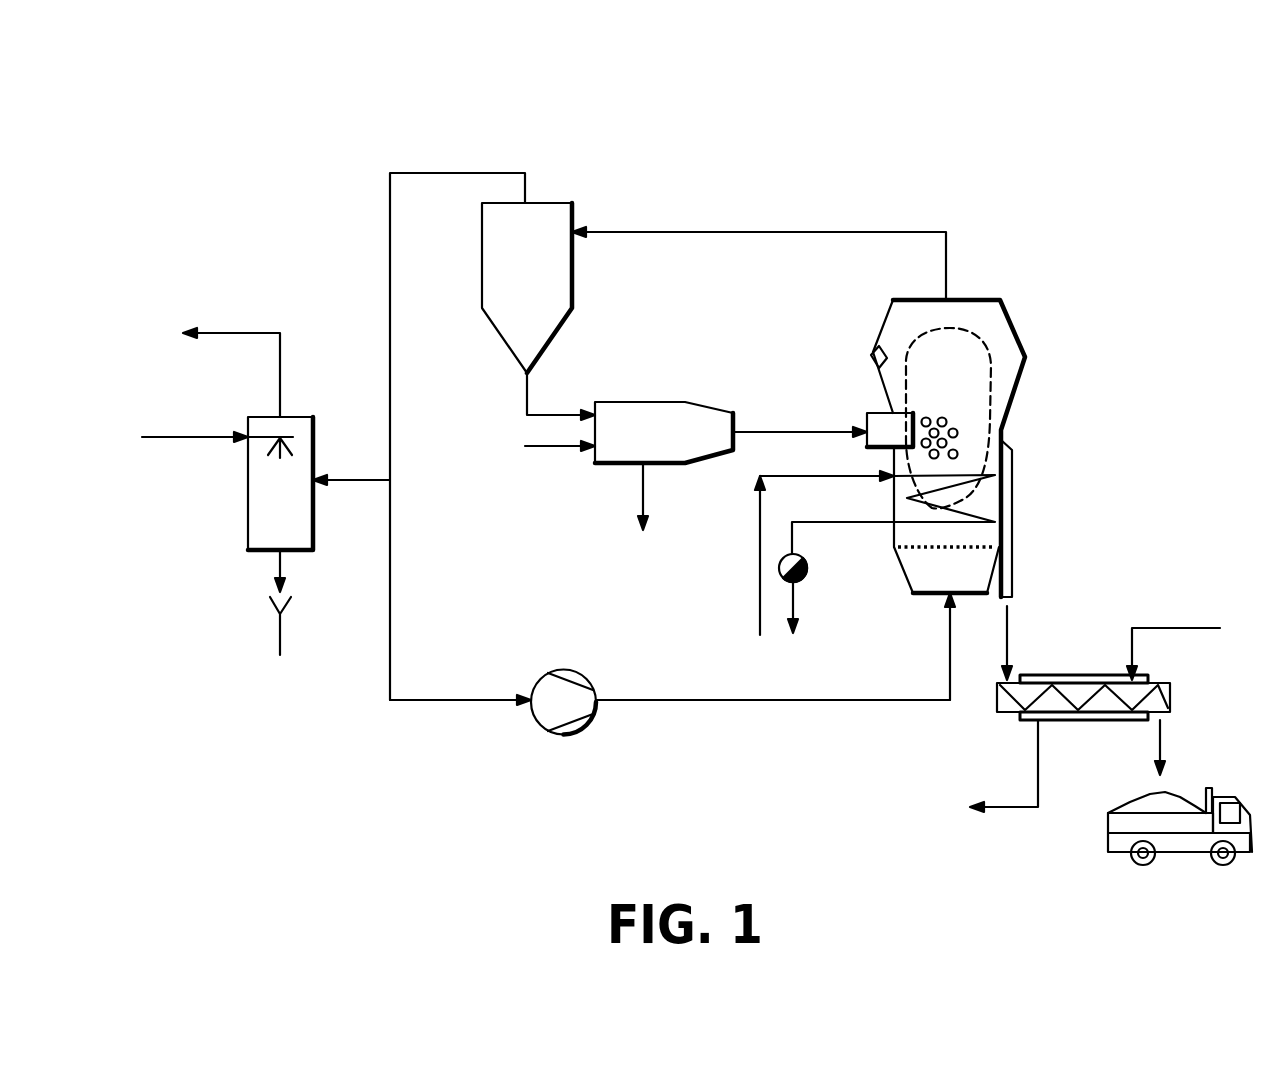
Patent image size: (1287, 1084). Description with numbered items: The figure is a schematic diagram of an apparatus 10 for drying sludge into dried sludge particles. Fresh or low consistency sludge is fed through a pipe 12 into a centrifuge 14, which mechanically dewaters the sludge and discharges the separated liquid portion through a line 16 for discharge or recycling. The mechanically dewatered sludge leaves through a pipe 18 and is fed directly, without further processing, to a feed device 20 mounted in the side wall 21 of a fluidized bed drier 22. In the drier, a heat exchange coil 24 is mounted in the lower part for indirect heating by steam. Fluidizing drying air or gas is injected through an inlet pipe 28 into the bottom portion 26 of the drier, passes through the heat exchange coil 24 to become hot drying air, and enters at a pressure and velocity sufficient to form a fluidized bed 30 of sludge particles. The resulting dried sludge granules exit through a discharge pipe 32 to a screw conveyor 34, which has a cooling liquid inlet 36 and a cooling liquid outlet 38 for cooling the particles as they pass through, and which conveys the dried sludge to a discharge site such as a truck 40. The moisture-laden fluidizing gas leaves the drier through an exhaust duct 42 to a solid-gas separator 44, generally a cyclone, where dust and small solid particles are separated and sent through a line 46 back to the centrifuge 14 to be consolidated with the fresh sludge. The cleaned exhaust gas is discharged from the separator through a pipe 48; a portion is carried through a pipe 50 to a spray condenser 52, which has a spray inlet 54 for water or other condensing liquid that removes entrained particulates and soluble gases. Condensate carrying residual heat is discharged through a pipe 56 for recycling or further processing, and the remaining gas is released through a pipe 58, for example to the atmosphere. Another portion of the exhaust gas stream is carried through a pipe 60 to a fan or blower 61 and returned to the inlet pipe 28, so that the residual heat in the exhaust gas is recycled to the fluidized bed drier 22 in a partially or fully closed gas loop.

The apparatus 10 is at (1043, 160).
The pipe 12 is at (546, 446).
The centrifuge 14 is at (672, 418).
The line 16 is at (641, 483).
The pipe 18 is at (773, 432).
The feed device 20 is at (878, 433).
The side wall 21 is at (881, 356).
The fluidized bed drier 22 is at (952, 478).
The heat exchange coil 24 is at (957, 472).
The bottom portion 26 is at (942, 592).
The inlet pipe 28 is at (948, 657).
The fluidized bed 30 is at (962, 367).
The discharge pipe 32 is at (1014, 530).
The screw conveyor 34 is at (1160, 695).
The cooling liquid inlet 36 is at (1187, 628).
The cooling liquid outlet 38 is at (1038, 747).
The truck 40 is at (1192, 842).
The exhaust duct 42 is at (830, 232).
The solid-gas separator 44 is at (540, 222).
The line 46 is at (527, 405).
The pipe 48 is at (389, 197).
The pipe 50 is at (358, 483).
The spray condenser 52 is at (256, 500).
The spray inlet 54 is at (190, 437).
The pipe 56 is at (283, 634).
The pipe 58 is at (251, 333).
The pipe 60 is at (457, 703).
The fan or blower 61 is at (573, 735).